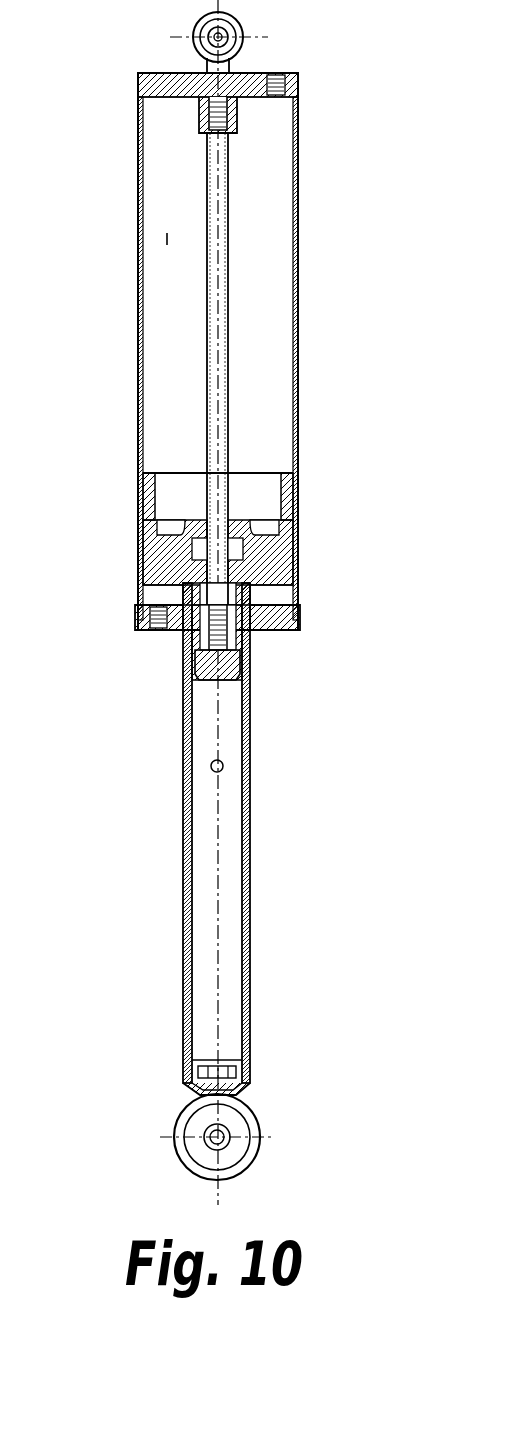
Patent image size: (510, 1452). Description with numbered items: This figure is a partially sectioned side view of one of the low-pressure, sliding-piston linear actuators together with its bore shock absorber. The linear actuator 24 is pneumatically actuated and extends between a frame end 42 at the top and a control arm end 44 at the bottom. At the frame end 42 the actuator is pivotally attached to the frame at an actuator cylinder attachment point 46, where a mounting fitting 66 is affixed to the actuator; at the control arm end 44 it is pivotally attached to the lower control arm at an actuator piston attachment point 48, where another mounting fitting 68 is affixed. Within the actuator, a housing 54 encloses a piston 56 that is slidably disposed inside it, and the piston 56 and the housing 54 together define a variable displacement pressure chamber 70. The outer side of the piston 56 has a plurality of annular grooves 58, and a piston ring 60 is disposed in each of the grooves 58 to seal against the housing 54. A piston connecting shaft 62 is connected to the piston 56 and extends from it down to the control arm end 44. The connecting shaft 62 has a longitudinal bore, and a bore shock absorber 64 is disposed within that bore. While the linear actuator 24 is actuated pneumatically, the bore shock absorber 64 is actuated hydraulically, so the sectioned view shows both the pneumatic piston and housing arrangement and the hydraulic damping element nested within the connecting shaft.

The linear actuator 24 is at (298, 222).
The frame end 42 is at (156, 73).
The control arm end 44 is at (188, 1093).
The actuator cylinder attachment point 46 is at (205, 45).
The actuator piston attachment point 48 is at (226, 1130).
The housing 54 is at (298, 298).
The piston 56 is at (298, 458).
The annular grooves 58 is at (137, 585).
The piston ring 60 is at (298, 583).
The piston connecting shaft 62 is at (250, 743).
The bore shock absorber 64 is at (225, 680).
The mounting fitting 66 is at (243, 52).
The mounting fitting 68 is at (245, 1093).
The variable displacement pressure chamber 70 is at (167, 240).